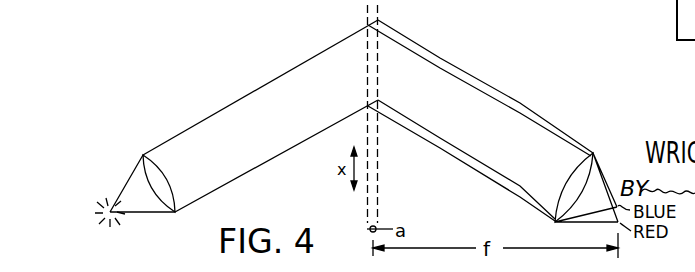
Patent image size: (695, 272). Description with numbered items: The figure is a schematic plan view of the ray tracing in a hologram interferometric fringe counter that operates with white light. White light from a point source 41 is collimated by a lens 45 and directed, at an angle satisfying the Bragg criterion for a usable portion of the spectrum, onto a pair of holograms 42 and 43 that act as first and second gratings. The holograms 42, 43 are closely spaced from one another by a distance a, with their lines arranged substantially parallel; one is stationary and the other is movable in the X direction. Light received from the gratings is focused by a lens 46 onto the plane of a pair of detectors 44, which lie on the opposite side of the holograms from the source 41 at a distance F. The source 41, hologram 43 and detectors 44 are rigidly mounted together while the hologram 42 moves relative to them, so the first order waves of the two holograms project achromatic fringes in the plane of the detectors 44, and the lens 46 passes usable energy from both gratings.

The source 41 is at (110, 214).
The hologram 42 is at (366, 6).
The hologram 43 is at (380, 6).
The detectors 44 is at (610, 227).
The lens 45 is at (143, 155).
The lens 46 is at (593, 152).